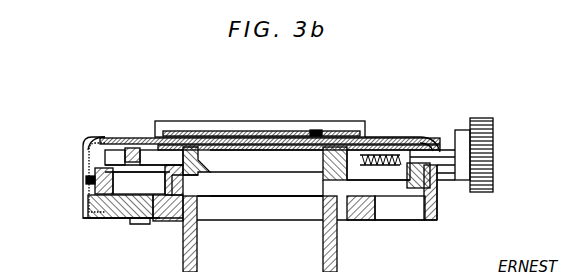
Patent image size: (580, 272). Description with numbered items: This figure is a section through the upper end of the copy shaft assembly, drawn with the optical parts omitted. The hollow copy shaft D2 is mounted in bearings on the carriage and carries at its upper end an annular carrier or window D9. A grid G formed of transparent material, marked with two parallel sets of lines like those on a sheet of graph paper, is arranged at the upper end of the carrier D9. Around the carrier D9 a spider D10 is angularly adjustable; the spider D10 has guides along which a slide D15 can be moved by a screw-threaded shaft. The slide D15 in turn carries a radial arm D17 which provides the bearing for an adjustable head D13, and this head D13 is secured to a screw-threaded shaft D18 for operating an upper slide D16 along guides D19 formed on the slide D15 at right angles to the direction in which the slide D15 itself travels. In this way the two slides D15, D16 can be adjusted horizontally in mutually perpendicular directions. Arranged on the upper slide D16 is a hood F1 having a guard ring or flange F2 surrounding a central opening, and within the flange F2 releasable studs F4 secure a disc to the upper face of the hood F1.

The guides D19 is at (103, 137).
The slide D16 is at (135, 144).
The guard ring or flange F2 is at (243, 121).
The releasable studs F4 is at (316, 130).
The hood F1 is at (385, 138).
The screw-threaded shaft D18 is at (442, 152).
The adjustable head D13 is at (494, 158).
The radial arm D17 is at (443, 178).
The slide D15 is at (87, 180).
The spider D10 is at (137, 224).
The grid G is at (238, 150).
The annular carrier or window D9 is at (334, 170).
The copy shaft D2 is at (338, 248).